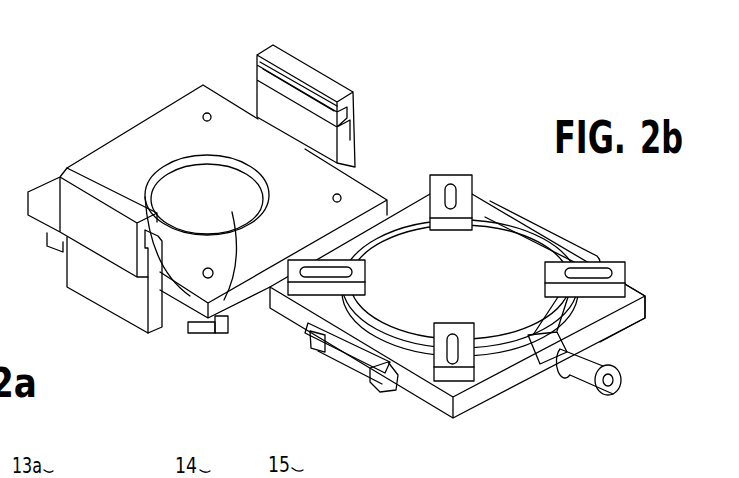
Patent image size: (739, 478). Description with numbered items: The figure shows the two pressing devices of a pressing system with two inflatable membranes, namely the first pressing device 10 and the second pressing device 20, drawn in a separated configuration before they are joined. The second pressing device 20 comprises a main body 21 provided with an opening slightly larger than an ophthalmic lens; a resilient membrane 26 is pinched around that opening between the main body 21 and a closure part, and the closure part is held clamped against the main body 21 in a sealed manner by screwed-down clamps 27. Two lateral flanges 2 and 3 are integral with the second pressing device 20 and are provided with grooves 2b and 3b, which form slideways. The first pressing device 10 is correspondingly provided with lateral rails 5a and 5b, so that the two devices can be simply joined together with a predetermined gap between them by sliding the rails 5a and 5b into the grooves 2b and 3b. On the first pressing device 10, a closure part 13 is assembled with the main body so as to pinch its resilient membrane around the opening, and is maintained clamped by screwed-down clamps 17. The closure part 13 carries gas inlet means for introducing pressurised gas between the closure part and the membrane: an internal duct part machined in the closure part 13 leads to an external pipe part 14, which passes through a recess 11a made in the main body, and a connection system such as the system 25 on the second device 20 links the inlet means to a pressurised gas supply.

The lateral flange 2 is at (83, 303).
The groove 2b is at (147, 303).
The lateral flange 3 is at (328, 64).
The groove 3b is at (252, 64).
The lateral rail 5a is at (338, 357).
The lateral rail 5b is at (570, 237).
The first pressing device 10 is at (491, 402).
The recess 11a is at (553, 364).
The closure part 13 is at (485, 247).
The external pipe part 14 is at (623, 324).
The screwed-down clamp 17 is at (452, 175).
The second pressing device 20 is at (100, 143).
The main body 21 is at (138, 147).
The connection system 25 is at (580, 388).
The resilient membrane 26 is at (218, 334).
The screwed-down clamp 27 is at (47, 234).